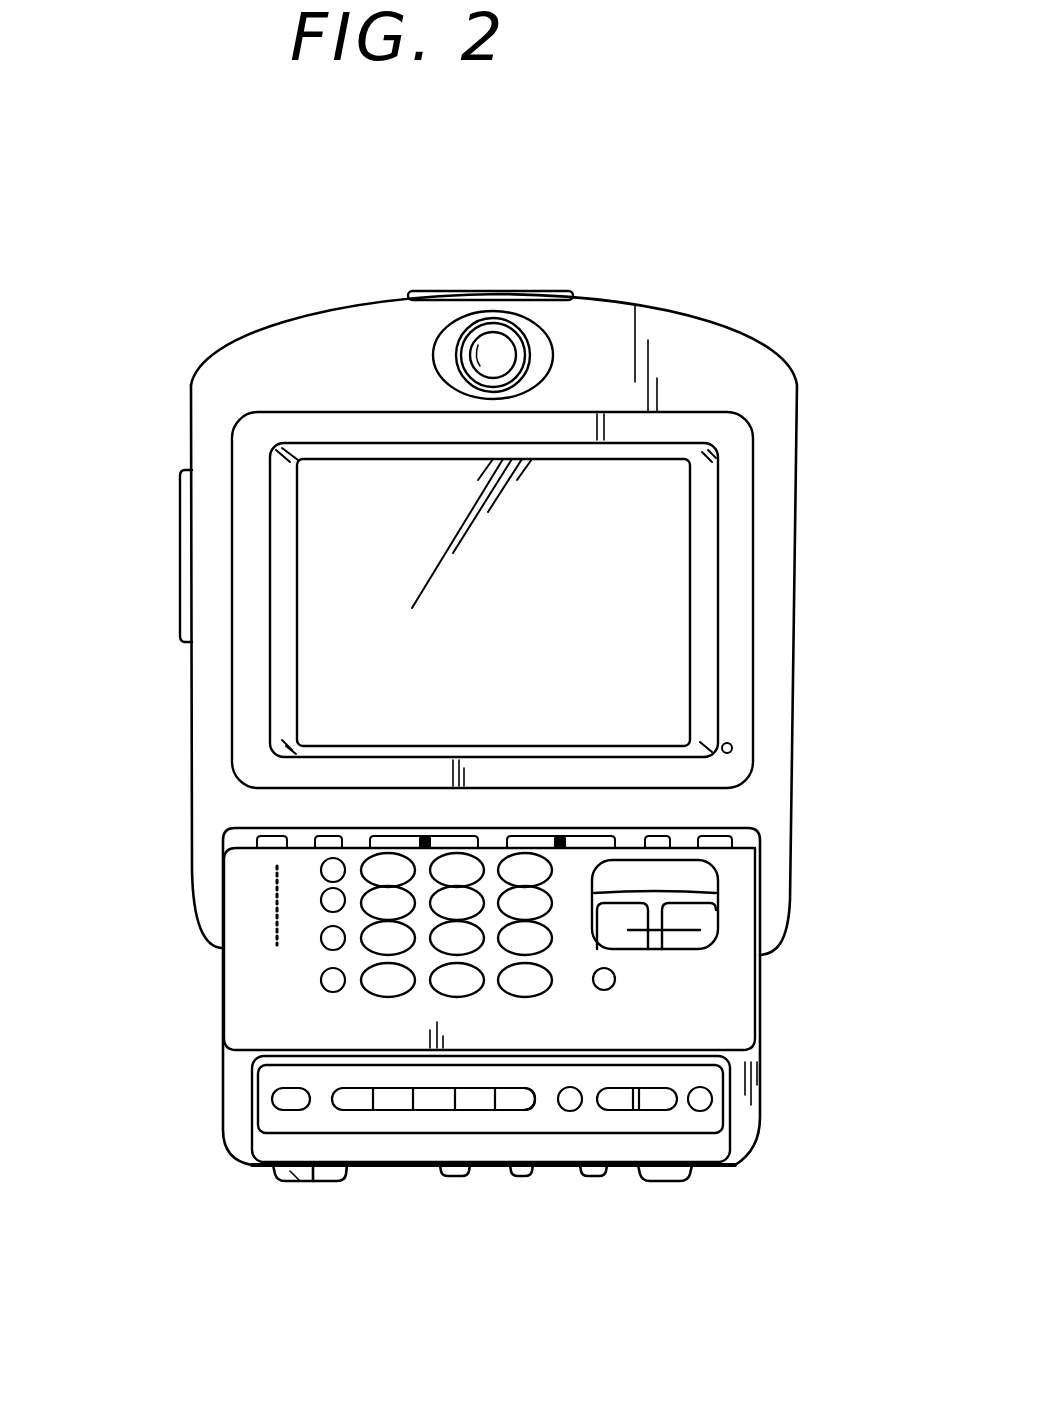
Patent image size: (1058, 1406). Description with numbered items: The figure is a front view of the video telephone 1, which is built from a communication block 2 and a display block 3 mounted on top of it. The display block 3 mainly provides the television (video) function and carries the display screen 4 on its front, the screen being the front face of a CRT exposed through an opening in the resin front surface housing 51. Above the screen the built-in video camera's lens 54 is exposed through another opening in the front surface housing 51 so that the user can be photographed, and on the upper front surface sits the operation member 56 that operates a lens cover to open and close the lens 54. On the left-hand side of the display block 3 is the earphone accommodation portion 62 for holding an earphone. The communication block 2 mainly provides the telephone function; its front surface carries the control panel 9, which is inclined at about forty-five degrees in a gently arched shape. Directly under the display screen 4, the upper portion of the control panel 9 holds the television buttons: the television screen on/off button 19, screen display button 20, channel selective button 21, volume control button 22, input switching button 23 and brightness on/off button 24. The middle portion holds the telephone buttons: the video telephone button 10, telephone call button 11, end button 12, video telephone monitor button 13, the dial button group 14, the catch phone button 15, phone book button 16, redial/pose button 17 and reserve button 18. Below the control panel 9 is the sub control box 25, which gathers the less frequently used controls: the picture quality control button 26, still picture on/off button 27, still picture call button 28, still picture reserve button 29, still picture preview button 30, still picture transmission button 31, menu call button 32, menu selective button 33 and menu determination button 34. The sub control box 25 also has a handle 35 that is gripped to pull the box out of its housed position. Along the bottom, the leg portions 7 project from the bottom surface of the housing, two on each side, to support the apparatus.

The video telephone 1 is at (500, 724).
The communication block 2 is at (764, 1132).
The display block 3 is at (761, 330).
The display screen 4 is at (612, 617).
The leg portion 7 is at (328, 1181).
The control panel 9 is at (718, 1000).
The video telephone button 10 is at (761, 902).
The telephone call button 11 is at (700, 930).
The end button 12 is at (700, 917).
The video telephone monitor button 13 is at (617, 978).
The dial button group 14 is at (497, 1006).
The catch phone button 15 is at (322, 870).
The phone book button 16 is at (321, 900).
The redial/pose button 17 is at (321, 940).
The reserve button 18 is at (323, 985).
The television screen on/off button 19 is at (718, 838).
The screen display button 20 is at (657, 838).
The channel selective button 21 is at (595, 837).
The volume control button 22 is at (390, 838).
The input switching button 23 is at (332, 838).
The brightness on/off button 24 is at (268, 838).
The sub control box 25 is at (273, 1120).
The picture quality control button 26 is at (280, 1100).
The still picture on/off button 27 is at (353, 1103).
The still picture call button 28 is at (393, 1103).
The still picture reserve button 29 is at (433, 1103).
The still picture preview button 30 is at (475, 1103).
The still picture transmission button 31 is at (515, 1103).
The menu call button 32 is at (700, 1103).
The menu selective button 33 is at (615, 1103).
The menu determination button 34 is at (570, 1103).
The handle 35 is at (280, 1184).
The front surface housing 51 is at (258, 352).
The lens 54 is at (507, 351).
The operation member 56 is at (443, 292).
The earphone accommodation portion 62 is at (180, 546).